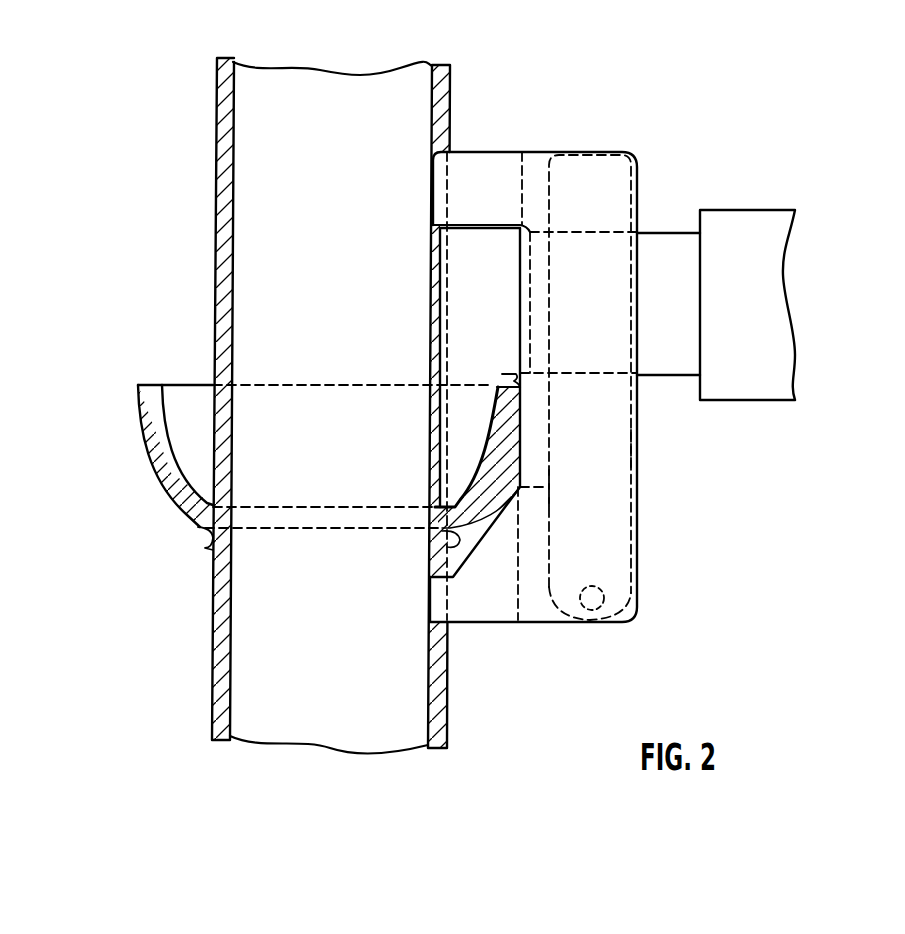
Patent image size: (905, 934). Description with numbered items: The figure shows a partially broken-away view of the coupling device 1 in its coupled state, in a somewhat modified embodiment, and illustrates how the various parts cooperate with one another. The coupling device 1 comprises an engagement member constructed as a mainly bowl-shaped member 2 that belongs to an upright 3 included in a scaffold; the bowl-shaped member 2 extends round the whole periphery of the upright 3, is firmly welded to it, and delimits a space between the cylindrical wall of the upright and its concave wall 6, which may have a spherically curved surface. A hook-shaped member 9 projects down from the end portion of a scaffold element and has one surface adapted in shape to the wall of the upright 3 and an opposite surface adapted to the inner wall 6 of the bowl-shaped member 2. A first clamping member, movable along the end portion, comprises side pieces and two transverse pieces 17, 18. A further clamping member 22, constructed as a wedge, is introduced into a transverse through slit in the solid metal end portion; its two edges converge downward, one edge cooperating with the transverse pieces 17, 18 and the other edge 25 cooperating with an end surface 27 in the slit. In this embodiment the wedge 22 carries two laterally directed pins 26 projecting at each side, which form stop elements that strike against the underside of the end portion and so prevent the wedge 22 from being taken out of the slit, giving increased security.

The coupling device 1 is at (474, 128).
The bowl-shaped member 2 is at (167, 498).
The upright 3 is at (213, 305).
The concave wall 6 is at (492, 437).
The hook-shaped member 9 is at (462, 460).
The transverse piece 17 is at (543, 313).
The transverse piece 18 is at (533, 588).
The clamping member 22 is at (627, 490).
The edge 25 is at (627, 452).
The laterally directed pin 26 is at (594, 597).
The end surface 27 is at (630, 300).